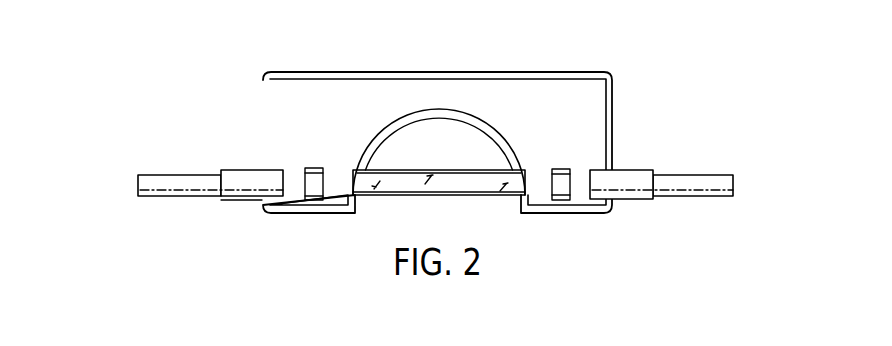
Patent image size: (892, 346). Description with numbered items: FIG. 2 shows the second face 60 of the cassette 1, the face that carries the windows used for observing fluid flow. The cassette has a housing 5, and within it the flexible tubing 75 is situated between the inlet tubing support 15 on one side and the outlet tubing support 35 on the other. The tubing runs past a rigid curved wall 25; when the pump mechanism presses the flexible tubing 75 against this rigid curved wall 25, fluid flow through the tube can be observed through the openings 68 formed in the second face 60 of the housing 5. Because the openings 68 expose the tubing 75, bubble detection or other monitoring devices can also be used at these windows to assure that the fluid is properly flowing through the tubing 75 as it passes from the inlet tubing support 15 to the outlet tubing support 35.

The light emitting device 1 is at (435, 133).
The housing 5 is at (262, 63).
The inlet tubing support 15 is at (227, 170).
The rigid curved wall 25 is at (437, 117).
The outlet tubing support 35 is at (643, 170).
The second face 60 is at (306, 130).
The openings 68 is at (313, 190).
The flexible tubing 75 is at (438, 186).